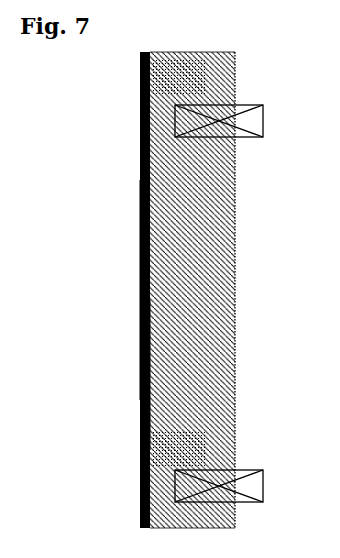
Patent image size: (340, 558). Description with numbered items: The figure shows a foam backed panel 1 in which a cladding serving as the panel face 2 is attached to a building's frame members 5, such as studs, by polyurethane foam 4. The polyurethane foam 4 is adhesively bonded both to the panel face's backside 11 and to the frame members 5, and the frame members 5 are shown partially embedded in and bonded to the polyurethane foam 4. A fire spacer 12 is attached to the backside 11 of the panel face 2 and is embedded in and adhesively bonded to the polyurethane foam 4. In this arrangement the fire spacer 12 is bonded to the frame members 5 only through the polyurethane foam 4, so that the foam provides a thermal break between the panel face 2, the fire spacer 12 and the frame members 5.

The foam backed panel 1 is at (134, 131).
The panel face 2 is at (142, 280).
The polyurethane foam 4 is at (218, 332).
The frame members 5 is at (236, 122).
The backside 11 is at (152, 372).
The fire spacer 12 is at (171, 440).